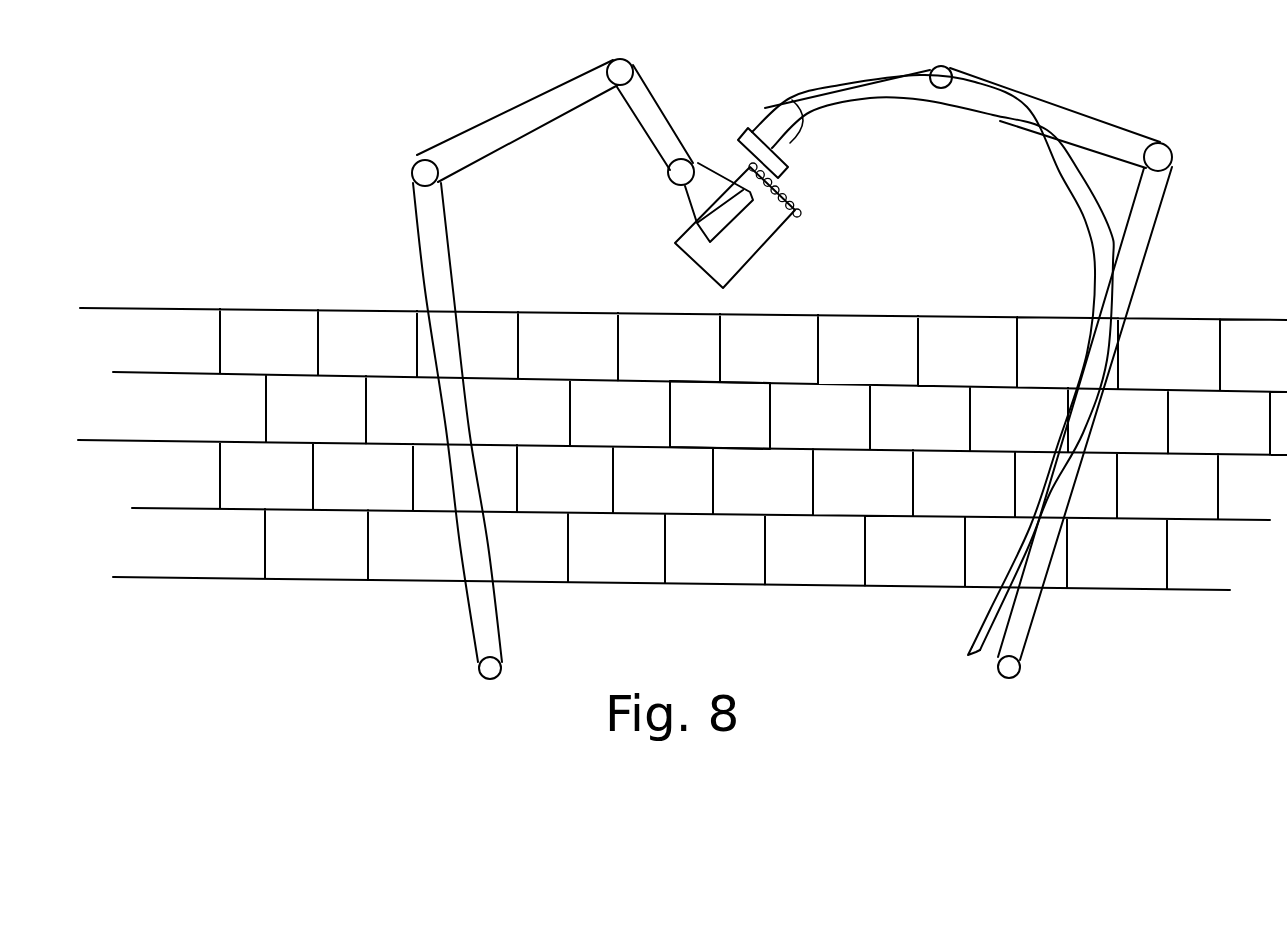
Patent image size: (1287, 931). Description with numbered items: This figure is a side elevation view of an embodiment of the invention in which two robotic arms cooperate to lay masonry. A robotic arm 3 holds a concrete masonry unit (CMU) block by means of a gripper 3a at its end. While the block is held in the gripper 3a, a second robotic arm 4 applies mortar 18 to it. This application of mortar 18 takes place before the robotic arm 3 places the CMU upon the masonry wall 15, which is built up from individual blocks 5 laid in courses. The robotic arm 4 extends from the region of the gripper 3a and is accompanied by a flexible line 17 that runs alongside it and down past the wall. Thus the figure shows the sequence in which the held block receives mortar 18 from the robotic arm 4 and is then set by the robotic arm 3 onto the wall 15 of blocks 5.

The robotic arm 3 is at (523, 120).
The gripper 3a is at (693, 197).
The robotic arm 4 is at (1070, 117).
The block 5 is at (378, 344).
The masonry wall 15 is at (753, 422).
The cable 17 is at (1077, 187).
The mortar 18 is at (798, 212).